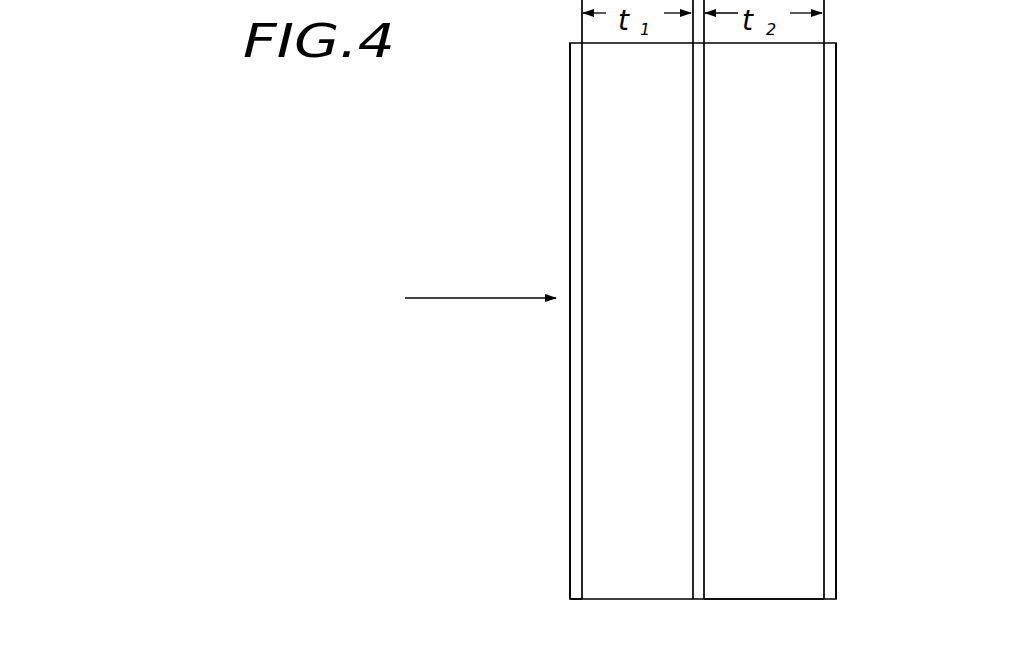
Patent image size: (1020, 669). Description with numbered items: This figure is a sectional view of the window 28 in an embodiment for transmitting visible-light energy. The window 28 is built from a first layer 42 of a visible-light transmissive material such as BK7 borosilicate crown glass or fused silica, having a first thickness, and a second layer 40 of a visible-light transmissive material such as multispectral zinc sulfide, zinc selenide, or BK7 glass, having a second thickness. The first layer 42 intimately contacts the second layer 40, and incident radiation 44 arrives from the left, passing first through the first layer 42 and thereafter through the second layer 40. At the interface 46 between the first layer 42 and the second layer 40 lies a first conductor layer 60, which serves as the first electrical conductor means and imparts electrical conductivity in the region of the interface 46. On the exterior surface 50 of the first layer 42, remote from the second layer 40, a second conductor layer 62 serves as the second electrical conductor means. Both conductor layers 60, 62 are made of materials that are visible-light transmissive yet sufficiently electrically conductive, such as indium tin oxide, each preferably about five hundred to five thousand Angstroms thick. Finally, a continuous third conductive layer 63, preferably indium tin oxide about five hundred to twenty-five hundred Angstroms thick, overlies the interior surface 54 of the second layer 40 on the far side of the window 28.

The window 28 is at (559, 40).
The first layer 42 is at (592, 140).
The first conductor layer 60 is at (697, 586).
The interface 46 is at (706, 596).
The interior surface 54 is at (824, 118).
The third conductive layer 63 is at (836, 168).
The exterior surface 50 is at (582, 545).
The second conductor layer 62 is at (576, 597).
The second layer 40 is at (796, 585).
The incident radiation 44 is at (447, 298).